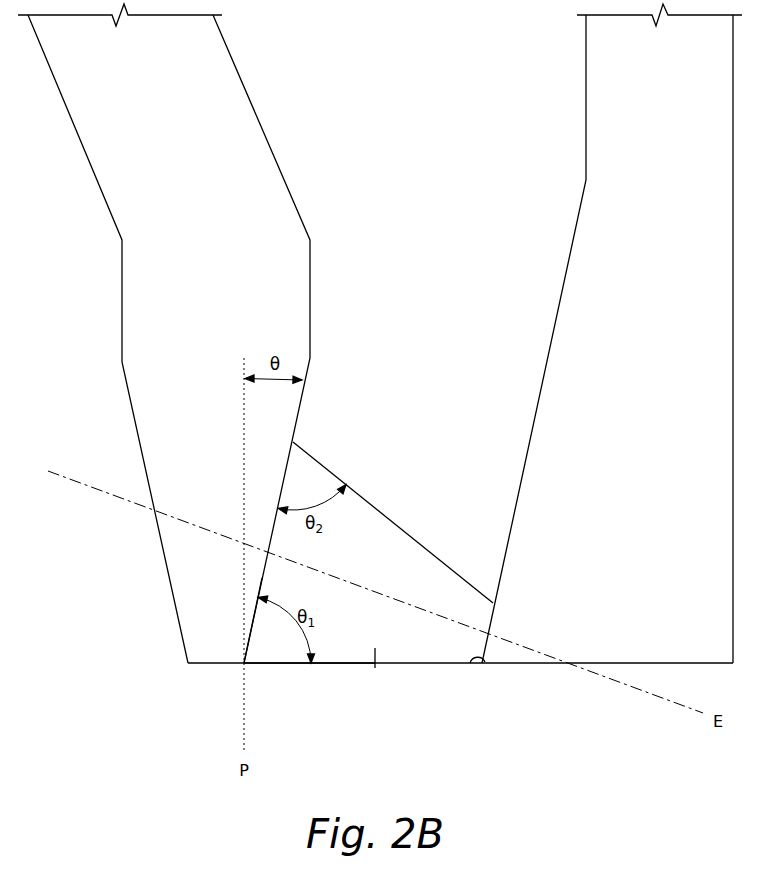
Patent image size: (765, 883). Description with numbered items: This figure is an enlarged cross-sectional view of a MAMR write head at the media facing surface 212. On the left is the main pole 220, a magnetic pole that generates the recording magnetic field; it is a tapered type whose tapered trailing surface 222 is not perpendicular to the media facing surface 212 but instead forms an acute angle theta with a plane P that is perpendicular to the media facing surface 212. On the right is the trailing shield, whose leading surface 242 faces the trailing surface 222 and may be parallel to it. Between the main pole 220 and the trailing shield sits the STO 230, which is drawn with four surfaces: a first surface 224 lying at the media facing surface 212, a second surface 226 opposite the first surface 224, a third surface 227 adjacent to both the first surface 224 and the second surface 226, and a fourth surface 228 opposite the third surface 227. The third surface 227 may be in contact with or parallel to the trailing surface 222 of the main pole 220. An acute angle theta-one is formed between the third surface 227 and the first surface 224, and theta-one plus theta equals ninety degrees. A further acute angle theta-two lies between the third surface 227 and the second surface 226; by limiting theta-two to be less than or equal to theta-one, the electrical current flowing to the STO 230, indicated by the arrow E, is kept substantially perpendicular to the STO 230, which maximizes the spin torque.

The media facing surface 212 is at (213, 667).
The main pole 220 is at (163, 548).
The tapered trailing surface 222 is at (304, 397).
The first surface 224 is at (288, 667).
The second surface 226 is at (375, 508).
The third surface 227 is at (262, 578).
The fourth surface 228 is at (473, 668).
The STO 230 is at (375, 668).
The leading surface 242 is at (542, 399).